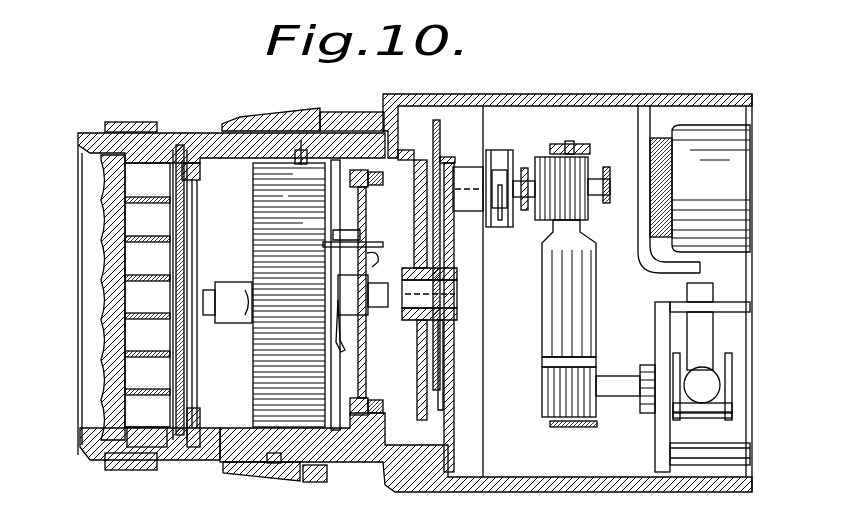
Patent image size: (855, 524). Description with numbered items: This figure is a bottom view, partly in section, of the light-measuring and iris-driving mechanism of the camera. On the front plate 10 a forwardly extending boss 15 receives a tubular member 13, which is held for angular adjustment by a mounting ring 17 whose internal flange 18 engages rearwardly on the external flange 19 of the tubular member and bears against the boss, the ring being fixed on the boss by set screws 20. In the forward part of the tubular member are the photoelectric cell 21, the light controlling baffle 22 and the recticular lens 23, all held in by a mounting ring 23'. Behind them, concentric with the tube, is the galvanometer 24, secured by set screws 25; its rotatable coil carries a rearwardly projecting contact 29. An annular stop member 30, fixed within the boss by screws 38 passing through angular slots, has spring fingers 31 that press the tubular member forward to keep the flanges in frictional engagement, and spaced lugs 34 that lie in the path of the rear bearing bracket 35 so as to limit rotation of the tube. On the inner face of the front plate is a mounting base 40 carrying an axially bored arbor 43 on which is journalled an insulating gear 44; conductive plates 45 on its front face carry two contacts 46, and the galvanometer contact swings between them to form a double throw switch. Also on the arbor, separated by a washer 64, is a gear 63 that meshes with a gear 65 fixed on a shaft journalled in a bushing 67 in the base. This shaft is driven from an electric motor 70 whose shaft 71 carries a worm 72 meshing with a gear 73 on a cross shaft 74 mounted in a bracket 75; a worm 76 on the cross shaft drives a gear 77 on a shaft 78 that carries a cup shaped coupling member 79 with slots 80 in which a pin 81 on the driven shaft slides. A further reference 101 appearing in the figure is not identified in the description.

The front plate 10 is at (404, 96).
The tubular member 13 is at (203, 132).
The boss 15 is at (345, 116).
The mounting ring 17 is at (302, 110).
The internal flange 18 is at (272, 464).
The external flange 19 is at (280, 470).
The set screws 20 is at (314, 480).
The photoelectric cell 21 is at (184, 215).
The light controlling baffle 22 is at (142, 257).
The recticular lens 23 is at (93, 312).
The mounting ring 23' is at (112, 108).
The galvanometer 24 is at (266, 343).
The set screws 25 is at (300, 166).
The contact 29 is at (355, 248).
The annular stop member 30 is at (378, 156).
The spring fingers 31 is at (338, 352).
The lugs 34 is at (340, 232).
The rear bearing bracket 35 is at (345, 283).
The screws 38 is at (370, 180).
The mounting base 40 is at (458, 404).
The arbor 43 is at (456, 282).
The gear 44 is at (420, 385).
The conductive plates 45 is at (412, 216).
The contacts 46 is at (377, 262).
The gear 63 is at (445, 382).
The washer 64 is at (438, 332).
The gear 65 is at (440, 128).
The bushing 67 is at (462, 170).
The electric motor 70 is at (738, 350).
The shaft 71 is at (628, 398).
The worm 72 is at (553, 387).
The gear 73 is at (548, 362).
The cross shaft 74 is at (548, 305).
The bracket 75 is at (562, 428).
The worm 76 is at (585, 160).
The gear 77 is at (545, 156).
The shaft 78 is at (612, 185).
The cup shaped coupling member 79 is at (512, 138).
The slots 80 is at (503, 225).
The pin 81 is at (494, 225).
The base 101 is at (633, 518).